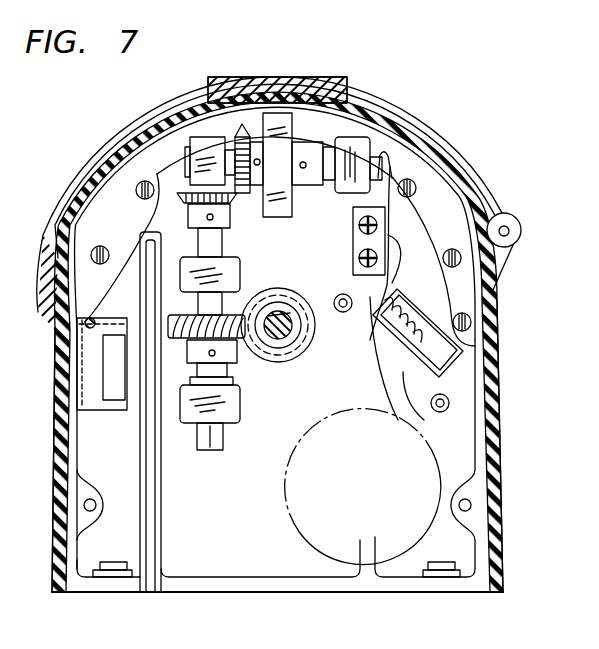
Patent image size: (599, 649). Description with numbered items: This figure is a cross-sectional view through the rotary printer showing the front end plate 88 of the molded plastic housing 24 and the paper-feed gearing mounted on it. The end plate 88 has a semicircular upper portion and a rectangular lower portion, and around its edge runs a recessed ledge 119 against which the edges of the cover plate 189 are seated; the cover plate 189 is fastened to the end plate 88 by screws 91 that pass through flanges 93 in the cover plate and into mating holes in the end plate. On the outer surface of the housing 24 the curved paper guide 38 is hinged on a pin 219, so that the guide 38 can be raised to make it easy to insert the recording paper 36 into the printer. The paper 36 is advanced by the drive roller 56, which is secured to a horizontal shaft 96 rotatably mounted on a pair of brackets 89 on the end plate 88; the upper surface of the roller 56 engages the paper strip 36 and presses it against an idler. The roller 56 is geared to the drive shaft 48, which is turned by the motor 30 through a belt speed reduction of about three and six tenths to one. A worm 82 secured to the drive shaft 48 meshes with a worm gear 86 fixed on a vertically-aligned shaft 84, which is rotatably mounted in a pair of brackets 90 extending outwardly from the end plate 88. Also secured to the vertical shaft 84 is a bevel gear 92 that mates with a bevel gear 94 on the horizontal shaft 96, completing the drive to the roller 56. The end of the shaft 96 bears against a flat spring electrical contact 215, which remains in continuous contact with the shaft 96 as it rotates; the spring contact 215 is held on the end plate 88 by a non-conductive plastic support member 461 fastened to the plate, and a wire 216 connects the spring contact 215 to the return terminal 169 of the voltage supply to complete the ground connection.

The housing 24 is at (505, 440).
The motor 30 is at (372, 472).
The recording paper 36 is at (243, 97).
The curved paper guide 38 is at (376, 100).
The drive shaft 48 is at (292, 336).
The drive roller 56 is at (292, 130).
The worm 82 is at (283, 363).
The vertically-aligned shaft 84 is at (213, 451).
The worm gear 86 is at (233, 368).
The front end plate 88 is at (344, 233).
The brackets 89 is at (143, 130).
The brackets 90 is at (186, 278).
The screws 91 is at (110, 185).
The bevel gear 92 is at (236, 228).
The flanges 93 is at (130, 153).
The bevel gear 94 is at (244, 206).
The horizontal shaft 96 is at (393, 163).
The recessed ledge 119 is at (483, 385).
The return terminal 169 is at (476, 350).
The cover plate 189 is at (500, 500).
The flat spring electrical contact 215 is at (437, 205).
The wire 216 is at (392, 290).
The pin 219 is at (521, 232).
The non-conductive plastic support member 461 is at (362, 240).